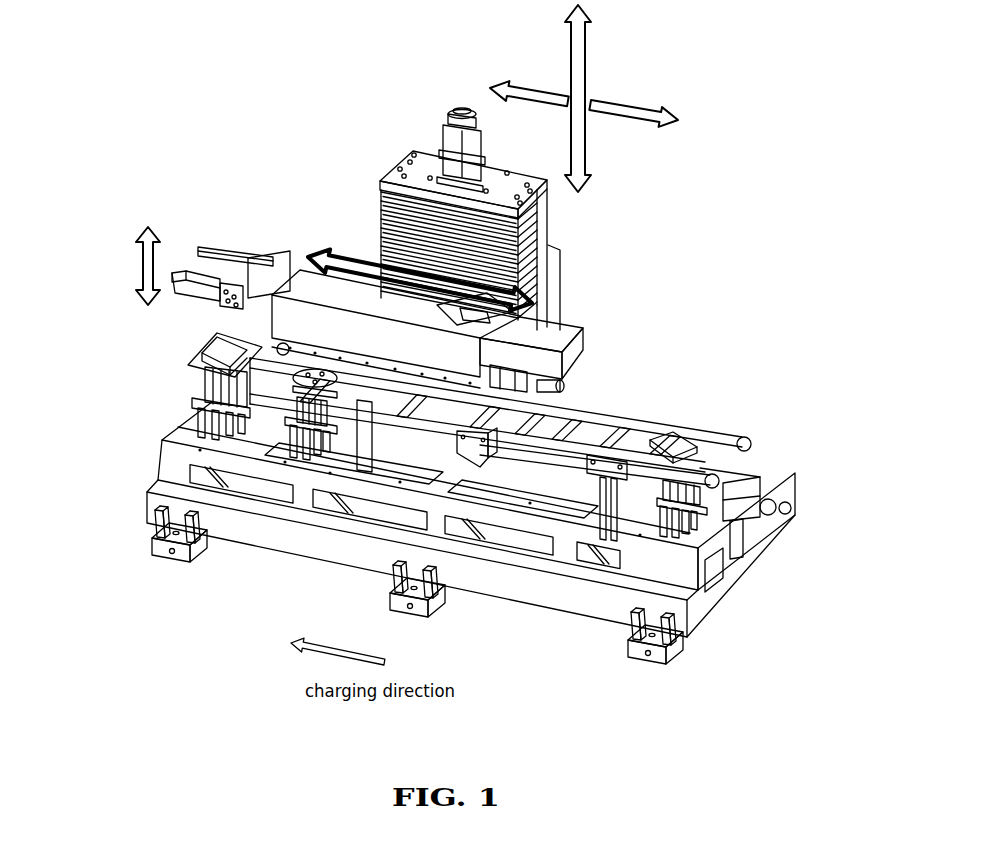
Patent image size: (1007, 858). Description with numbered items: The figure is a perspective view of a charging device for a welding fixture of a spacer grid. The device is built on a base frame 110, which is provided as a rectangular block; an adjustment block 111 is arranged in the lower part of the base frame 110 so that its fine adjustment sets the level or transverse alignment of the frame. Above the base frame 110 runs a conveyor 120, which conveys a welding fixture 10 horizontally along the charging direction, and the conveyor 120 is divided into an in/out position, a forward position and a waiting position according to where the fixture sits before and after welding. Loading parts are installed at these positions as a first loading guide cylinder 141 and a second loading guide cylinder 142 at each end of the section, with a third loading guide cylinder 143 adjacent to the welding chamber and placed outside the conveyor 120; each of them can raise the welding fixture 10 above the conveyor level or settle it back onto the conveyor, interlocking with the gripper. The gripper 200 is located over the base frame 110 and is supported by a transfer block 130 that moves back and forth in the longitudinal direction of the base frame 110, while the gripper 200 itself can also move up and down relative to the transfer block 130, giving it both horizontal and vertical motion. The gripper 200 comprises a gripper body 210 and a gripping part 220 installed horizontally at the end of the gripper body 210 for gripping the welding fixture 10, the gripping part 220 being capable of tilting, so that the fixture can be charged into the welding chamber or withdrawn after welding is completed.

The welding fixture 10 is at (698, 443).
The base frame 110 is at (738, 565).
The adjustment block 111 is at (675, 642).
The conveyor 120 is at (623, 409).
The transfer block 130 is at (400, 168).
The first loading guide cylinder 141 is at (616, 493).
The second loading guide cylinder 142 is at (302, 455).
The third loading guide cylinder 143 is at (210, 390).
The gripper 200 is at (220, 229).
The gripper body 210 is at (566, 335).
The gripping part 220 is at (249, 250).